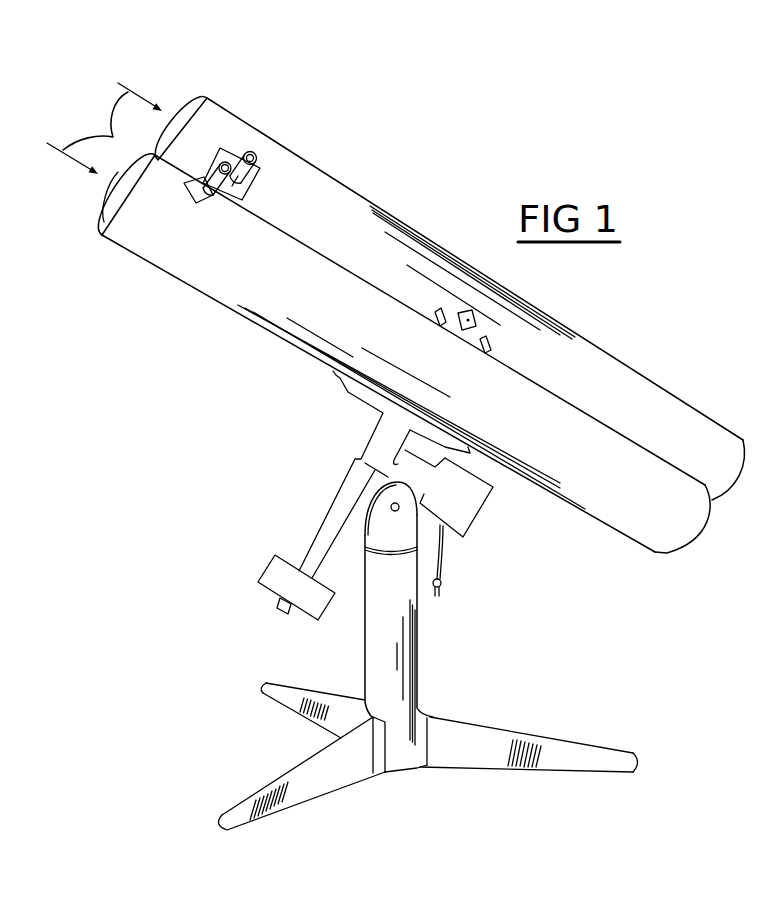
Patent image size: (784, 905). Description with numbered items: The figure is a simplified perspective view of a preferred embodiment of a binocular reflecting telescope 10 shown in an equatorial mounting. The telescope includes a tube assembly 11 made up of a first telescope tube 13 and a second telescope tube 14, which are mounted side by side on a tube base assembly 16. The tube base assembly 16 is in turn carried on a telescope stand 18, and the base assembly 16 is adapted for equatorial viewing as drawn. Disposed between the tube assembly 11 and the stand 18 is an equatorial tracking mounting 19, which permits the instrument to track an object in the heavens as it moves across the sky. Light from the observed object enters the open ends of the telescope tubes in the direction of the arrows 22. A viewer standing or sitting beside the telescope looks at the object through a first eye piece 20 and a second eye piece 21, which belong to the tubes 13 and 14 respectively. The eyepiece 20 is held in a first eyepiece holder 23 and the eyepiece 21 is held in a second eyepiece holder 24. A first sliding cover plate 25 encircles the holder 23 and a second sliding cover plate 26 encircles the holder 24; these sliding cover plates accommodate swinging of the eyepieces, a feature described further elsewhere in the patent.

The binocular reflecting telescope 10 is at (383, 187).
The tube assembly 11 is at (396, 318).
The first telescope tube 13 is at (548, 423).
The second telescope tube 14 is at (615, 377).
The tube base assembly 16 is at (340, 375).
The telescope stand 18 is at (392, 660).
The equatorial tracking mounting 19 is at (458, 498).
The first eye piece 20 is at (232, 148).
The second eye piece 21 is at (258, 158).
The arrows 22 is at (104, 128).
The first eyepiece holder 23 is at (213, 188).
The second eyepiece holder 24 is at (237, 180).
The first sliding cover plate 25 is at (220, 203).
The second sliding cover plate 26 is at (257, 188).